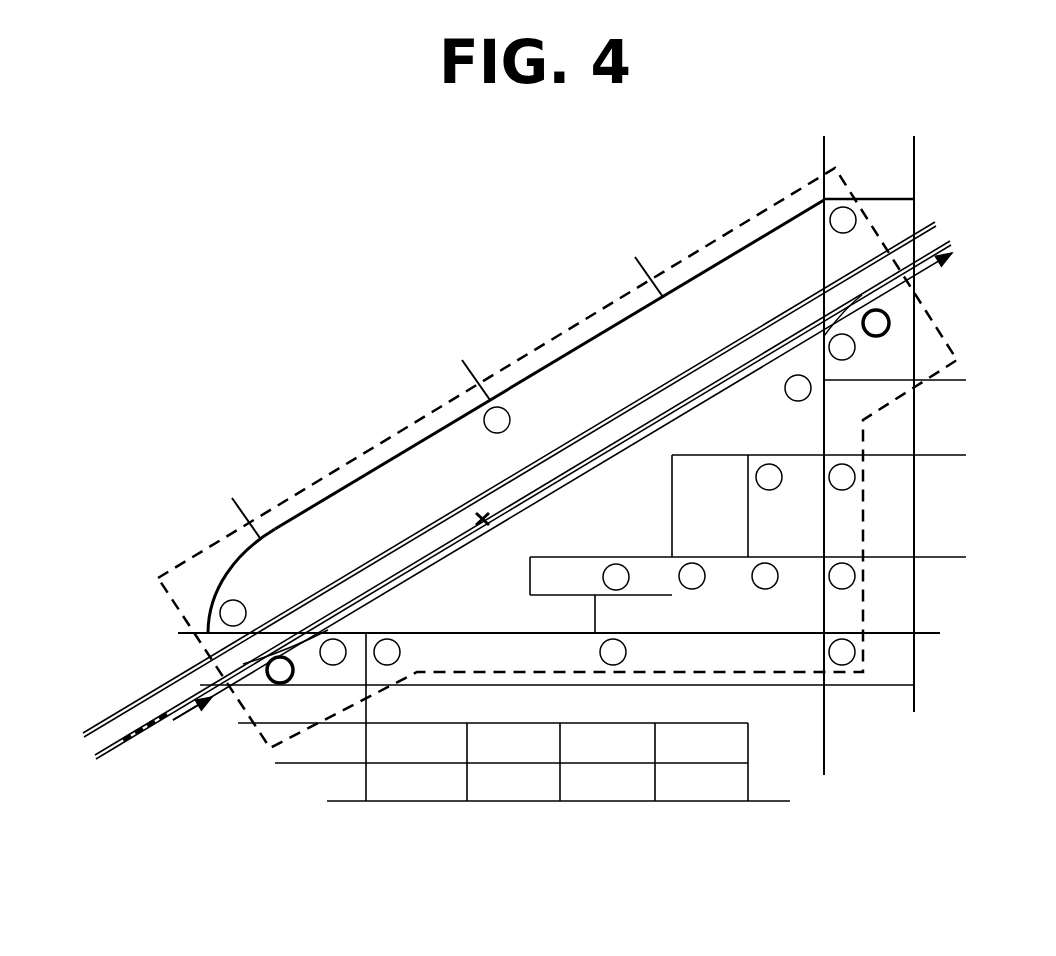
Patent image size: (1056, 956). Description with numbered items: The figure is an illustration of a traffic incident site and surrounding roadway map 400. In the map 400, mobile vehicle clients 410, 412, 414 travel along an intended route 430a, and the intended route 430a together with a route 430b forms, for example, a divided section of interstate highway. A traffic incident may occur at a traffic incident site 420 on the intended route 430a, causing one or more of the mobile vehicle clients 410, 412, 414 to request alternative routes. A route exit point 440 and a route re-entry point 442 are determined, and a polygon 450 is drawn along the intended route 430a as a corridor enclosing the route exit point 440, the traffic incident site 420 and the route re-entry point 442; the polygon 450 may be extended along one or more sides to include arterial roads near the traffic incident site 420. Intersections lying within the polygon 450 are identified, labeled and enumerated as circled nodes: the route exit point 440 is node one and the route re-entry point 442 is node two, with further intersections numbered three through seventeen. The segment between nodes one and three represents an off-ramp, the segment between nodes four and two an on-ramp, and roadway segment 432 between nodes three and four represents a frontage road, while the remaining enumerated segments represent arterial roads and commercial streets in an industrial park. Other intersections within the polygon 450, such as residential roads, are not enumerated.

The traffic incident site and surrounding roadway map 400 is at (243, 298).
The mobile vehicle client 410 is at (130, 744).
The mobile vehicle client 412 is at (150, 733).
The mobile vehicle client 414 is at (167, 723).
The traffic incident site 420 is at (478, 505).
The intended route 430a is at (955, 240).
The route 430b is at (933, 221).
The roadway segment 432 is at (473, 550).
The route exit point 440 is at (248, 672).
The route re-entry point 442 is at (873, 298).
The polygon 450 is at (960, 362).